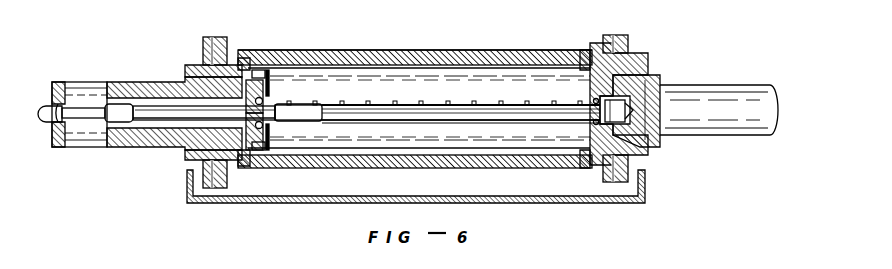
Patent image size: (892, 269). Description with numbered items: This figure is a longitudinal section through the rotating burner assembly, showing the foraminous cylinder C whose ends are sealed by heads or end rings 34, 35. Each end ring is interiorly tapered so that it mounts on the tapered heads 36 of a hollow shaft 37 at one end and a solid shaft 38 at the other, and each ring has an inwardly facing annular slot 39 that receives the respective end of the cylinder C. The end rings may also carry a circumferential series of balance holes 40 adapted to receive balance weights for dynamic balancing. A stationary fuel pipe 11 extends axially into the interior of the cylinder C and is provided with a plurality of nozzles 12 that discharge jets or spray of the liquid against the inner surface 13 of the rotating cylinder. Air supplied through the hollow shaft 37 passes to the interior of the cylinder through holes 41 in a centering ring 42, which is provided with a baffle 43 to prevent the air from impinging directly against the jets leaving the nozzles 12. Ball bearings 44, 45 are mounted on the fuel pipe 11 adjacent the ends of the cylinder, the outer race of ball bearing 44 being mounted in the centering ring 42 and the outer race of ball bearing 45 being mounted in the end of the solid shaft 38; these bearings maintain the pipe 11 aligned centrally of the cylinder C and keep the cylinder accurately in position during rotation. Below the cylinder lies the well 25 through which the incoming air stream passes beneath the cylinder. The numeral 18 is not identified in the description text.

The stationary pipe 11 is at (46, 123).
The nozzles 12 is at (344, 102).
The inner surface 13 is at (466, 67).
The outer tube 18 is at (497, 50).
The foraminous cylinder C is at (409, 45).
The well 25 is at (570, 197).
The end ring 34 is at (238, 63).
The end ring 35 is at (598, 44).
The tapered heads 36 is at (172, 80).
The hollow shaft 37 is at (88, 92).
The solid shaft 38 is at (725, 86).
The annular slot 39 is at (248, 58).
The balance holes 40 is at (214, 36).
The holes 41 is at (266, 99).
The centering ring 42 is at (270, 138).
The baffle 43 is at (267, 73).
The ball bearing 44 is at (270, 124).
The ball bearing 45 is at (590, 121).